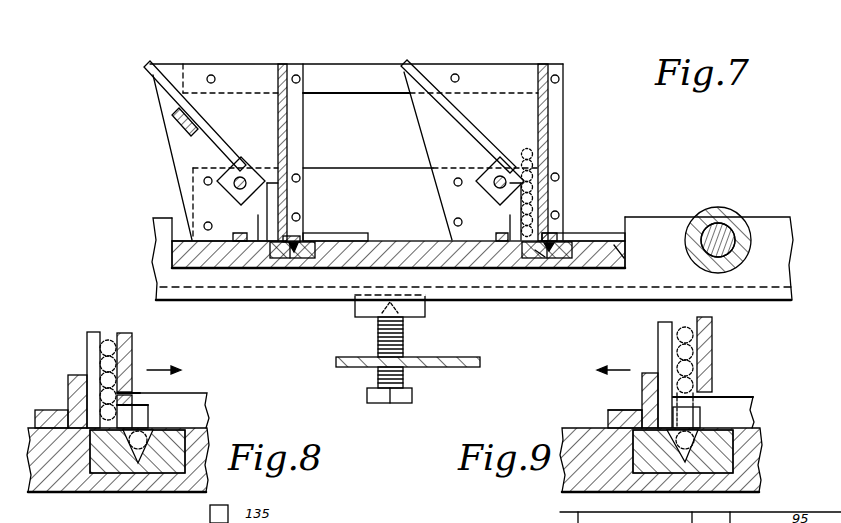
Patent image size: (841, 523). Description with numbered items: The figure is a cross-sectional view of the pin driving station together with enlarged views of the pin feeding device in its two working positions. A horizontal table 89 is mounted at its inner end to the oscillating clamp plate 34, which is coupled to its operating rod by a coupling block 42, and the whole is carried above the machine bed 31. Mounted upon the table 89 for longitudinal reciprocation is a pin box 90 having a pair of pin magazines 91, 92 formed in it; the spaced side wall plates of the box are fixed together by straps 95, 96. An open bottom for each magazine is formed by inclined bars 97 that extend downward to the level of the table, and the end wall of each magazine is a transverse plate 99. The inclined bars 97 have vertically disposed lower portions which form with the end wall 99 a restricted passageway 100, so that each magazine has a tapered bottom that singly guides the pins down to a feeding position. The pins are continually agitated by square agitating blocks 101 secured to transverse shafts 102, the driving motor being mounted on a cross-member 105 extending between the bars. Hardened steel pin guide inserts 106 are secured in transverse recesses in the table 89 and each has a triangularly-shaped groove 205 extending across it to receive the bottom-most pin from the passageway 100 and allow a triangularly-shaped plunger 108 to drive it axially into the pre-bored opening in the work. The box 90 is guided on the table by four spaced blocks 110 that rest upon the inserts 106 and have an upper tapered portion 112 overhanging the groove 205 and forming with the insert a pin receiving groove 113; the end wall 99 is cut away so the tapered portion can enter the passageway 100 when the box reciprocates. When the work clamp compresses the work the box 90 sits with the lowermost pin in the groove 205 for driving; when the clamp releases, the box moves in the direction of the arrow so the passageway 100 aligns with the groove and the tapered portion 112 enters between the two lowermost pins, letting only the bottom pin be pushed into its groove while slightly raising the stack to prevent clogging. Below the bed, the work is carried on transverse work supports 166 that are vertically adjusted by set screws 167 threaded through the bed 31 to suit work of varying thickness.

In FIG. 7, the machine bed 31 is at (338, 362).
In FIG. 7, the clamp plate 34 is at (163, 228).
In FIG. 7, the coupling block 42 is at (738, 217).
In FIG. 7, the horizontal table 89 is at (602, 247).
In FIG. 8, the horizontal table 89 is at (48, 475).
In FIG. 9, the horizontal table 89 is at (661, 460).
In FIG. 7, the pin box 90 is at (512, 58).
In FIG. 7, the pin magazine 91 is at (254, 65).
In FIG. 7, the pin magazine 92 is at (563, 64).
In FIG. 7, the strap 95 is at (370, 80).
In FIG. 7, the strap 96 is at (358, 178).
In FIG. 7, the inclined bar 97 is at (168, 82).
In FIG. 8, the inclined bar 97 is at (90, 362).
In FIG. 9, the inclined bar 97 is at (660, 331).
In FIG. 7, the transverse plate 99 is at (289, 135).
In FIG. 8, the transverse plate 99 is at (133, 343).
In FIG. 9, the transverse plate 99 is at (706, 345).
In FIG. 7, the restricted passageway 100 is at (273, 193).
In FIG. 8, the restricted passageway 100 is at (98, 343).
In FIG. 9, the restricted passageway 100 is at (678, 352).
In FIG. 7, the square agitating block 101 is at (247, 167).
In FIG. 7, the transverse shaft 102 is at (232, 170).
In FIG. 7, the cross-member 105 is at (177, 123).
In FIG. 7, the pin guide insert 106 is at (297, 256).
In FIG. 8, the pin guide insert 106 is at (118, 470).
In FIG. 9, the pin guide insert 106 is at (683, 451).
In FIG. 7, the plunger 108 is at (290, 252).
In FIG. 7, the block 110 is at (357, 232).
In FIG. 8, the block 110 is at (207, 410).
In FIG. 9, the block 110 is at (746, 405).
In FIG. 7, the tapered portion 112 is at (290, 238).
In FIG. 8, the tapered portion 112 is at (143, 410).
In FIG. 9, the tapered portion 112 is at (646, 392).
In FIG. 7, the pin receiving groove 113 is at (310, 260).
In FIG. 8, the pin receiving groove 113 is at (147, 415).
In FIG. 9, the pin receiving groove 113 is at (693, 417).
In FIG. 7, the work support 166 is at (367, 308).
In FIG. 7, the set screw 167 is at (403, 345).
In FIG. 7, the triangularly-shaped groove 205 is at (540, 253).
In FIG. 8, the triangularly-shaped groove 205 is at (143, 462).
In FIG. 9, the triangularly-shaped groove 205 is at (730, 448).